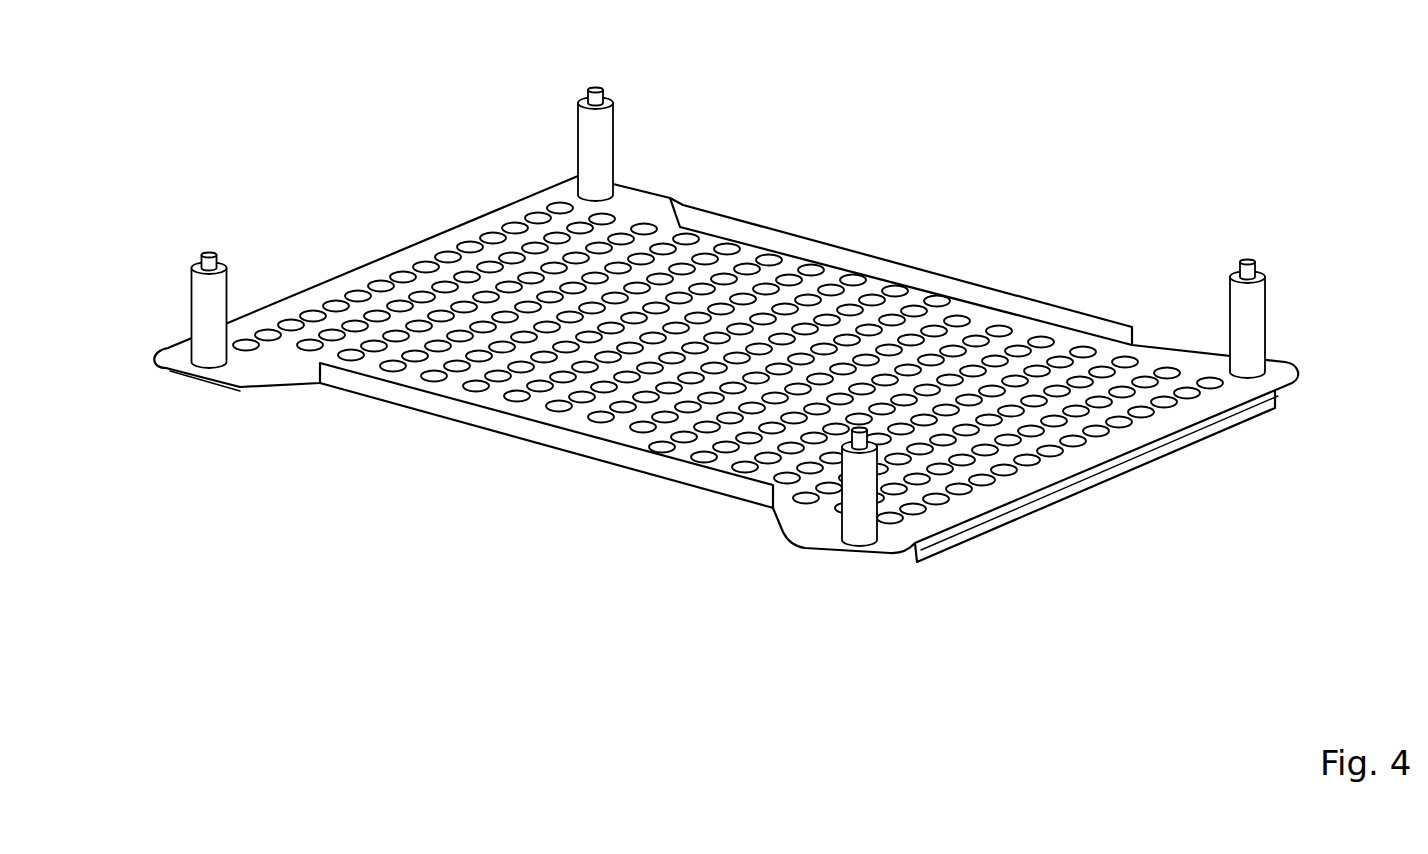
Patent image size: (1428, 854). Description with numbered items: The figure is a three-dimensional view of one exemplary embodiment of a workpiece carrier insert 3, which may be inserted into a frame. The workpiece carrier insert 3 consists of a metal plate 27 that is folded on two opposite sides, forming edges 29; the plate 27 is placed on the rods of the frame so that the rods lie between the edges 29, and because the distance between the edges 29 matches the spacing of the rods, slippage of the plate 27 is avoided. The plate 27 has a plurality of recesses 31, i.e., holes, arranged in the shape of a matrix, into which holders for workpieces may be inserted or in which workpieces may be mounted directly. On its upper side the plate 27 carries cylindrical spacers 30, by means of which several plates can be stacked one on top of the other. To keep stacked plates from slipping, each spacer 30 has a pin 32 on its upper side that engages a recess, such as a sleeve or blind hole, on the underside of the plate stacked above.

The workpiece carrier insert 3 is at (970, 128).
The metal plate 27 is at (650, 208).
The edges 29 is at (1137, 455).
The cylindrical spacer 30 is at (207, 300).
The recess 31 is at (808, 272).
The pin 32 is at (209, 255).